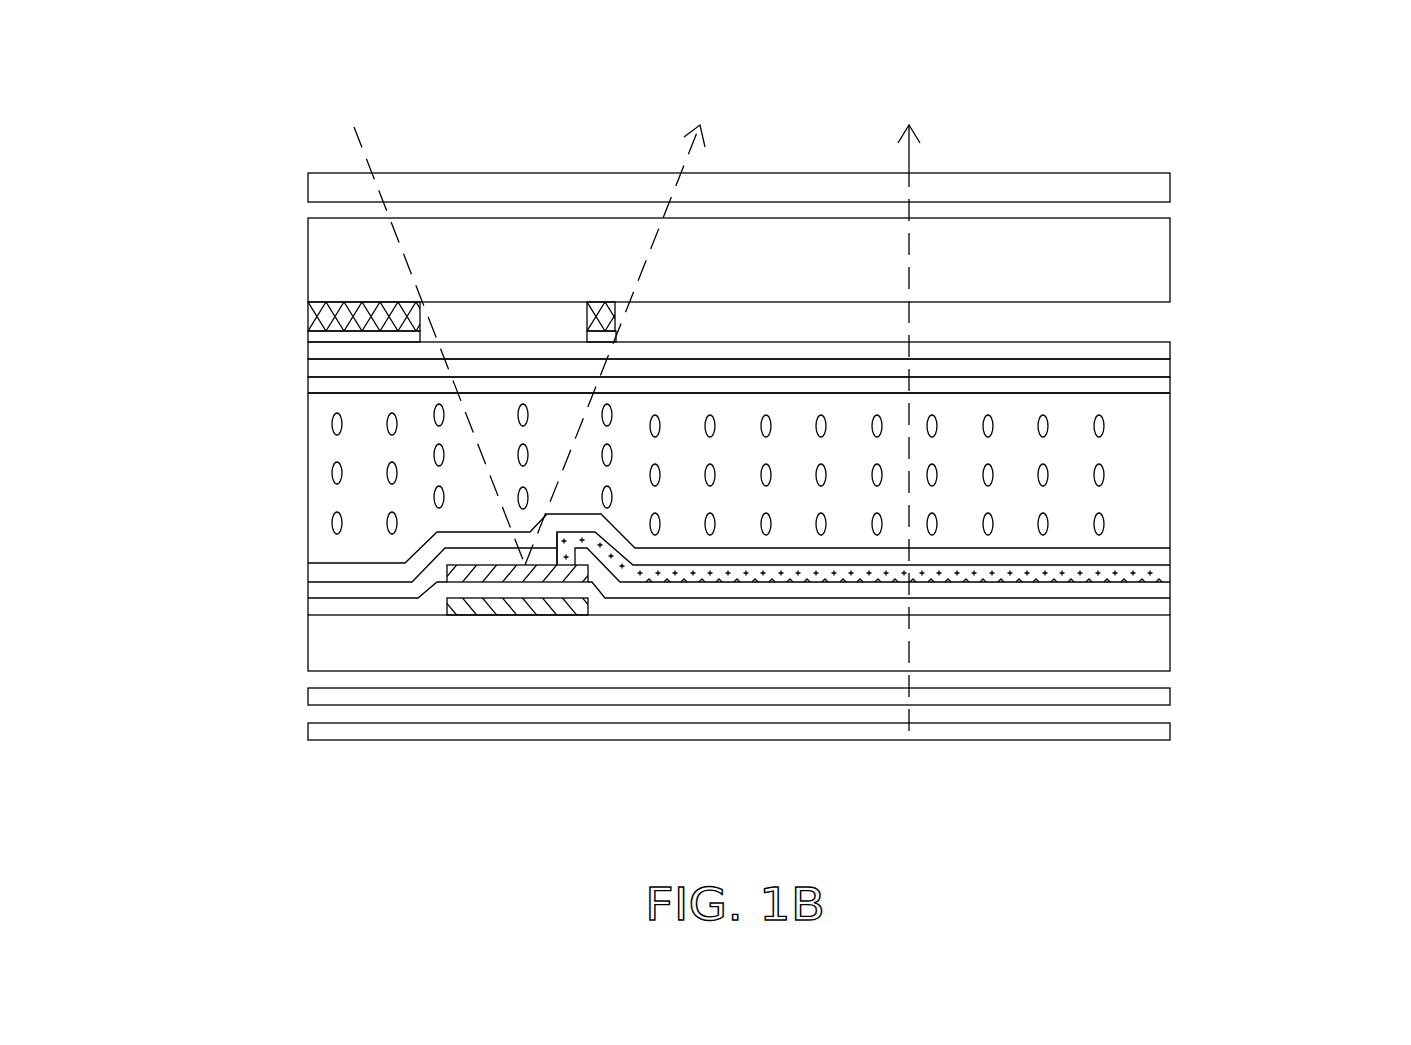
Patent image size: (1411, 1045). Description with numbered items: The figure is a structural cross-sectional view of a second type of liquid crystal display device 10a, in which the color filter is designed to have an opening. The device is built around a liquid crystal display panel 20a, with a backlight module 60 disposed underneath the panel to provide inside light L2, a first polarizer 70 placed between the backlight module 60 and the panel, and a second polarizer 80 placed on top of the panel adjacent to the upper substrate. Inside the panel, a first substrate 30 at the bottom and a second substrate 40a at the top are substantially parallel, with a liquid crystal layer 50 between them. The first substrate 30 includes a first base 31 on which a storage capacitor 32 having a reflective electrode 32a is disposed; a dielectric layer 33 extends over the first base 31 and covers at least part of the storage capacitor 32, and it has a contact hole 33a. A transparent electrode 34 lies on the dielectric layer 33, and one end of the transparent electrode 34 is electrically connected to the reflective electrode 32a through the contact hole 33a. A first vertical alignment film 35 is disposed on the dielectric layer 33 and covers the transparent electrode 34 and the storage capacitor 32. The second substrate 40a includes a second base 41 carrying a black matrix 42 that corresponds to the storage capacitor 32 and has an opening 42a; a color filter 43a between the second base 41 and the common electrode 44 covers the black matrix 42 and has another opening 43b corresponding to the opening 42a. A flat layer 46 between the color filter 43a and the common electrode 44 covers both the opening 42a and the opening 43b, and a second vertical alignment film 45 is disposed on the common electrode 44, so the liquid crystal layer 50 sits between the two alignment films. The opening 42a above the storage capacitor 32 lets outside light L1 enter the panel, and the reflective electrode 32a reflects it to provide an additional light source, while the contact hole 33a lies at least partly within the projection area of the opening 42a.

The liquid crystal display device 10a is at (153, 82).
The liquid crystal display panel 20a is at (1315, 360).
The first substrate 30 is at (1190, 622).
The first base 31 is at (1170, 640).
The storage capacitor 32 is at (525, 615).
The reflective electrode 32a is at (467, 573).
The dielectric layer 33 is at (785, 592).
The contact hole 33a is at (564, 562).
The transparent electrode 34 is at (875, 580).
The first vertical alignment film 35 is at (980, 556).
The second substrate 40a is at (1190, 312).
The second base 41 is at (1170, 258).
The black matrix 42 is at (308, 304).
The opening 42a is at (546, 312).
The color filter 43a is at (308, 333).
The opening 43b is at (492, 323).
The common electrode 44 is at (308, 367).
The second vertical alignment film 45 is at (308, 385).
The flat layer 46 is at (308, 347).
The liquid crystal layer 50 is at (1165, 462).
The backlight module 60 is at (1170, 732).
The first polarizer 70 is at (1170, 697).
The second polarizer 80 is at (1170, 189).
The outside light L1 is at (521, 328).
The inside light L2 is at (910, 415).